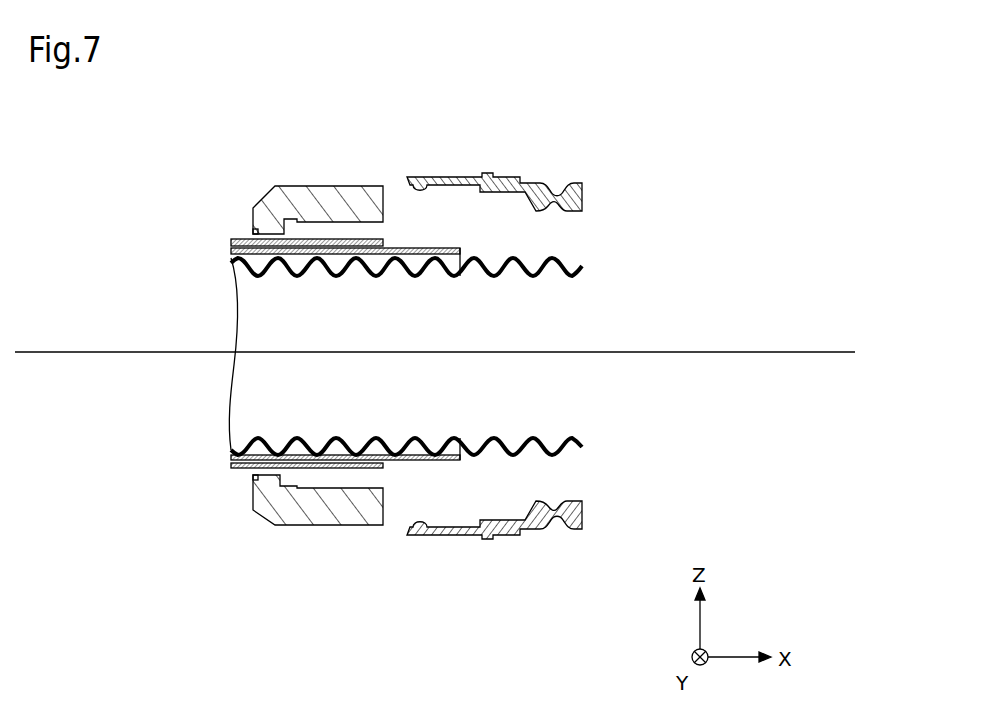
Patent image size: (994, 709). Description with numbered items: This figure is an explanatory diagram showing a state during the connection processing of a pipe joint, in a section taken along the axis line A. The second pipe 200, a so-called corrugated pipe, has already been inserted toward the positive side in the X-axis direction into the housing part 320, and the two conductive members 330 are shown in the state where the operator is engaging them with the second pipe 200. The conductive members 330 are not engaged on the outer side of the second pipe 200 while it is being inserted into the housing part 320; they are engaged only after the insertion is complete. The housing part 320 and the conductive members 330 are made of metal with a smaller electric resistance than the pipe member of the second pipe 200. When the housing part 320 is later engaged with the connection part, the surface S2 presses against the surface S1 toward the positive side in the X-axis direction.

The second pipe 200 is at (401, 248).
The housing part 320 is at (327, 186).
The conductive member 330 is at (502, 181).
The surface S1 is at (483, 176).
The surface S2 is at (283, 221).
The axis line A is at (34, 352).